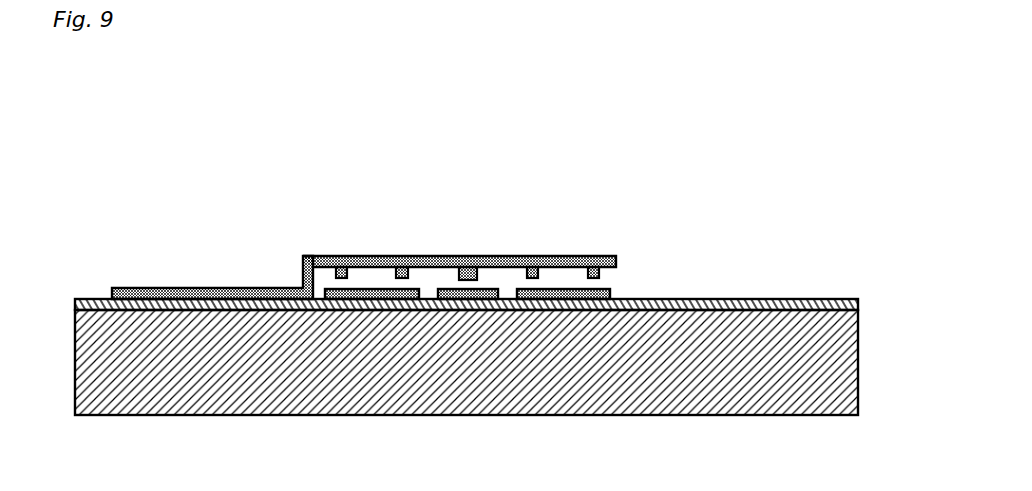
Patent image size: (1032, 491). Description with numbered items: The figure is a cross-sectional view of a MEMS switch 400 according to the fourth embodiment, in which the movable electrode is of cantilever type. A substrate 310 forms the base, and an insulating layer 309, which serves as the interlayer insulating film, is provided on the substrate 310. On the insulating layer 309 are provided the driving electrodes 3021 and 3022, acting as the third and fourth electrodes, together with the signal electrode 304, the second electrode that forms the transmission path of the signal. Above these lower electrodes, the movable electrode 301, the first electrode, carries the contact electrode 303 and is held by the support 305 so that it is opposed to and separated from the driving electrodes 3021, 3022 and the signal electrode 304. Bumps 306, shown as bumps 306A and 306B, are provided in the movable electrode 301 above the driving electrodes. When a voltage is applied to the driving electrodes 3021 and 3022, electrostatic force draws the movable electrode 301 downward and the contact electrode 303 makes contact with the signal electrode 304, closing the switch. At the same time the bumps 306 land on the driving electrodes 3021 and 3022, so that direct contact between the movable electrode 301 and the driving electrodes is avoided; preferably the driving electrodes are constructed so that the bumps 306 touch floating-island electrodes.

The MEMS switch 400 is at (215, 90).
The movable electrode 301 is at (442, 258).
The contact electrode 303 is at (470, 270).
The signal electrode 304 is at (478, 299).
The support 305 is at (300, 256).
The bumps 306 is at (368, 133).
The bump 306A is at (341, 268).
The bump 306B is at (402, 268).
The insulating layer 309 is at (280, 307).
The substrate 310 is at (680, 377).
The driving electrode 3021 is at (373, 299).
The driving electrode 3022 is at (590, 299).